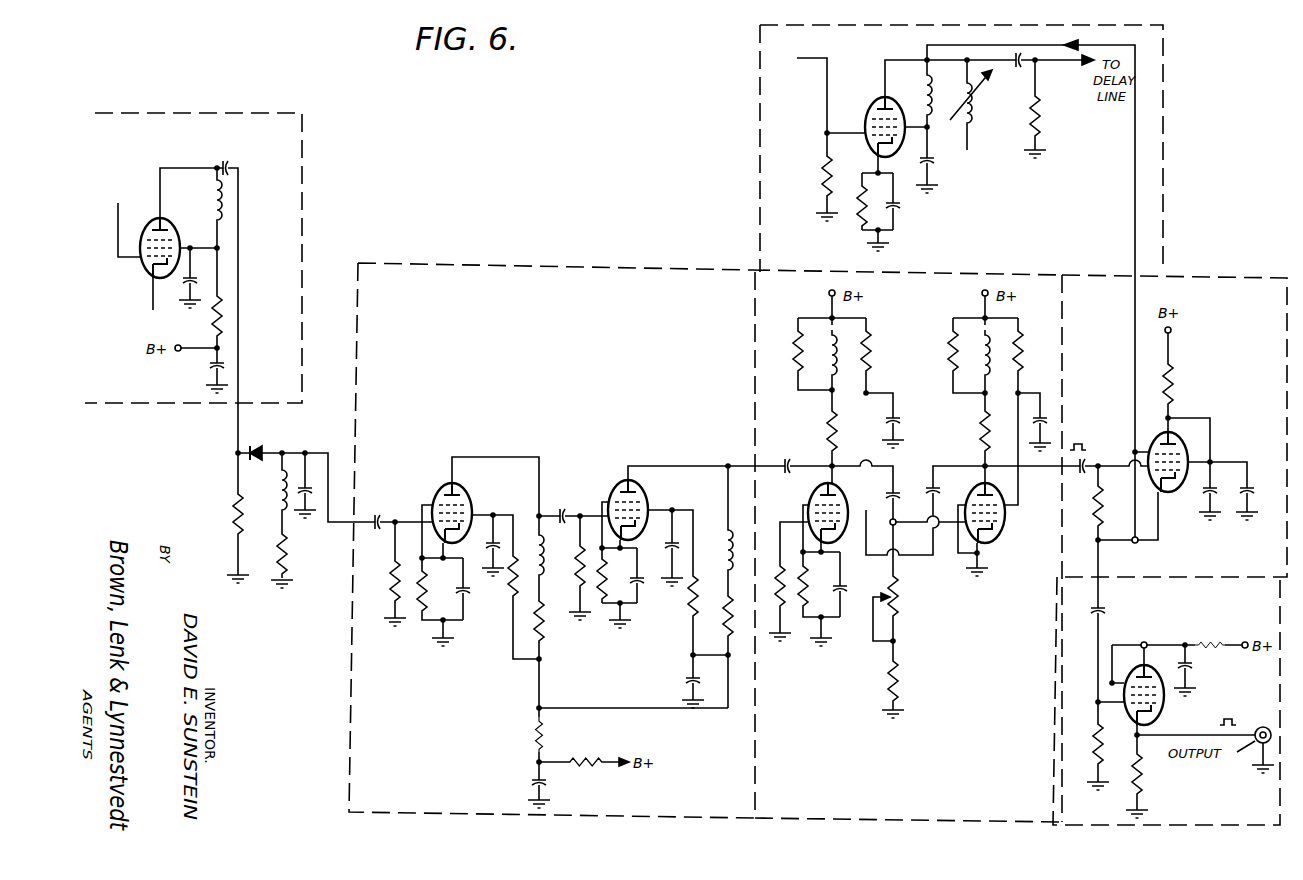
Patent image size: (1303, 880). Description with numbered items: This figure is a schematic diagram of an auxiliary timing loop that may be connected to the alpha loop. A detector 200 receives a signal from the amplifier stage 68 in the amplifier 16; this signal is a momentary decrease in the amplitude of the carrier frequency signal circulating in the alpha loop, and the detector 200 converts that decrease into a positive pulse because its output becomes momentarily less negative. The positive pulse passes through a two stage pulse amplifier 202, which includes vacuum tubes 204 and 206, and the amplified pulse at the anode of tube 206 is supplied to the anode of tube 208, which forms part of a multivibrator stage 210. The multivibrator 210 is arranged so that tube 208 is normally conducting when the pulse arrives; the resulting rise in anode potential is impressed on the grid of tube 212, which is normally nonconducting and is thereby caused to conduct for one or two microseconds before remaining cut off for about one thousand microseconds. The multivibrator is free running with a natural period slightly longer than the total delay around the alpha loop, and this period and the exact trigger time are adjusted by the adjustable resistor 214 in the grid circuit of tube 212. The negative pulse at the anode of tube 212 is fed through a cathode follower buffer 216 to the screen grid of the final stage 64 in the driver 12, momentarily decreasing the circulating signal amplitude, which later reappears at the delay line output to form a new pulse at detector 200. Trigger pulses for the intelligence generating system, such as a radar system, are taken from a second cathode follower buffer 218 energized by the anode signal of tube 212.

The driver 12 is at (760, 105).
The amplifier 16 is at (304, 163).
The final stage 64 is at (875, 88).
The amplifier stage 68 is at (192, 211).
The detector 200 is at (254, 451).
The two stage pulse amplifier 202 is at (625, 265).
The vacuum tube 204 is at (450, 482).
The vacuum tube 206 is at (628, 479).
The tube 208 is at (810, 495).
The multivibrator stage 210 is at (862, 822).
The tube 212 is at (967, 491).
The adjustable resistor 214 is at (896, 606).
The cathode follower buffer 216 is at (1200, 278).
The cathode follower buffer 218 is at (1282, 592).